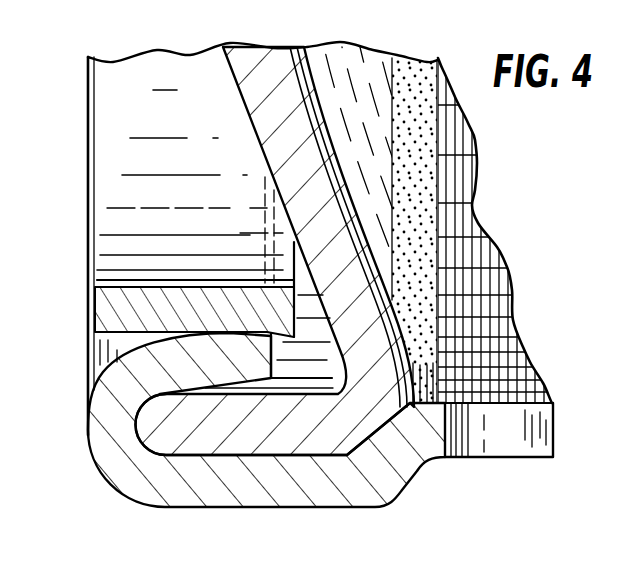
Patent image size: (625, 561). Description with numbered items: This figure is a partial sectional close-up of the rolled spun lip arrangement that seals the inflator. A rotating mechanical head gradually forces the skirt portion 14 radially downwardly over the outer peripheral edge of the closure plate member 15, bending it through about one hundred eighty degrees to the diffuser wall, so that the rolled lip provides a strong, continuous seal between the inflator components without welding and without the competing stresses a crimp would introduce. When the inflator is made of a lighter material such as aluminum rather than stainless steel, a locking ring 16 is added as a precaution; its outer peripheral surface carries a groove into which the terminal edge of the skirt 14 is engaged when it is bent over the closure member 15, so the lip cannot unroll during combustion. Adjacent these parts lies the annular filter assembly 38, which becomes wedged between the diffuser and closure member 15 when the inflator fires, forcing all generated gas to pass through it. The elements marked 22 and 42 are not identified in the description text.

The skirt portion 14 is at (103, 433).
The closure plate member 15 is at (263, 157).
The locking ring 16 is at (107, 305).
The support ring 22 is at (500, 450).
The annular filter assembly 38 is at (493, 323).
The spacer wall 42 is at (267, 330).